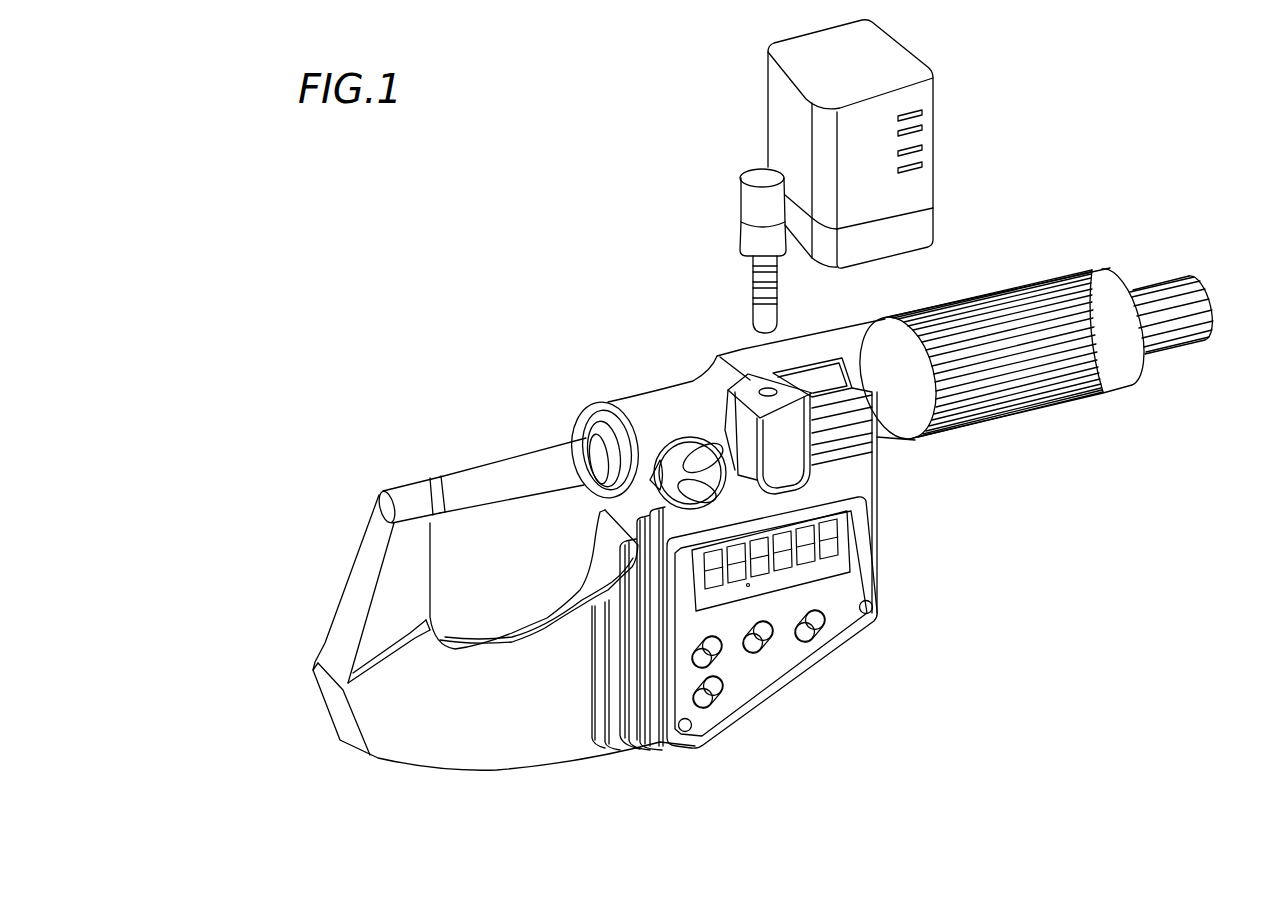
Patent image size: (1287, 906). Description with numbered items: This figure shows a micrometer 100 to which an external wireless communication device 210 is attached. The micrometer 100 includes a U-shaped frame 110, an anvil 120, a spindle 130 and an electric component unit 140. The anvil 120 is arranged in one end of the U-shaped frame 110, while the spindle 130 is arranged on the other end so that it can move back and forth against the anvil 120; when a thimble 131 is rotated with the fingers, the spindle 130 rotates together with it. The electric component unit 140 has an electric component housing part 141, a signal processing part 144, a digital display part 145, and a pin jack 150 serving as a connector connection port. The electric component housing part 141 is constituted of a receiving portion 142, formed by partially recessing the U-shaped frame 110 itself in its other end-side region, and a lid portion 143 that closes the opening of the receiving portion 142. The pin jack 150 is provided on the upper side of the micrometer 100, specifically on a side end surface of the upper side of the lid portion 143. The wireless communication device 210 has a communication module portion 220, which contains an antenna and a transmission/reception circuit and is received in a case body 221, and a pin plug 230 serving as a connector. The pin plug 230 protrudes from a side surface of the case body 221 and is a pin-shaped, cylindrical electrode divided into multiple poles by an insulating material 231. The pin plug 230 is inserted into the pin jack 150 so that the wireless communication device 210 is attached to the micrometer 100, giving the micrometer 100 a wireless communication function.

The micrometer 100 is at (510, 400).
The U-shaped frame 110 is at (422, 578).
The anvil 120 is at (432, 486).
The spindle 130 is at (470, 470).
The thimble 131 is at (1047, 398).
The electric component unit 140 is at (940, 608).
The electric component housing part 141 is at (912, 571).
The receiving portion 142 is at (826, 370).
The lid portion 143 is at (853, 483).
The signal processing part 144 is at (853, 468).
The digital display part 145 is at (842, 531).
The pin jack 150 is at (767, 392).
The wireless communication device 210 is at (963, 128).
The communication module portion 220 is at (777, 108).
The case body 221 is at (922, 212).
The pin plug 230 is at (758, 277).
The insulating material 231 is at (777, 307).